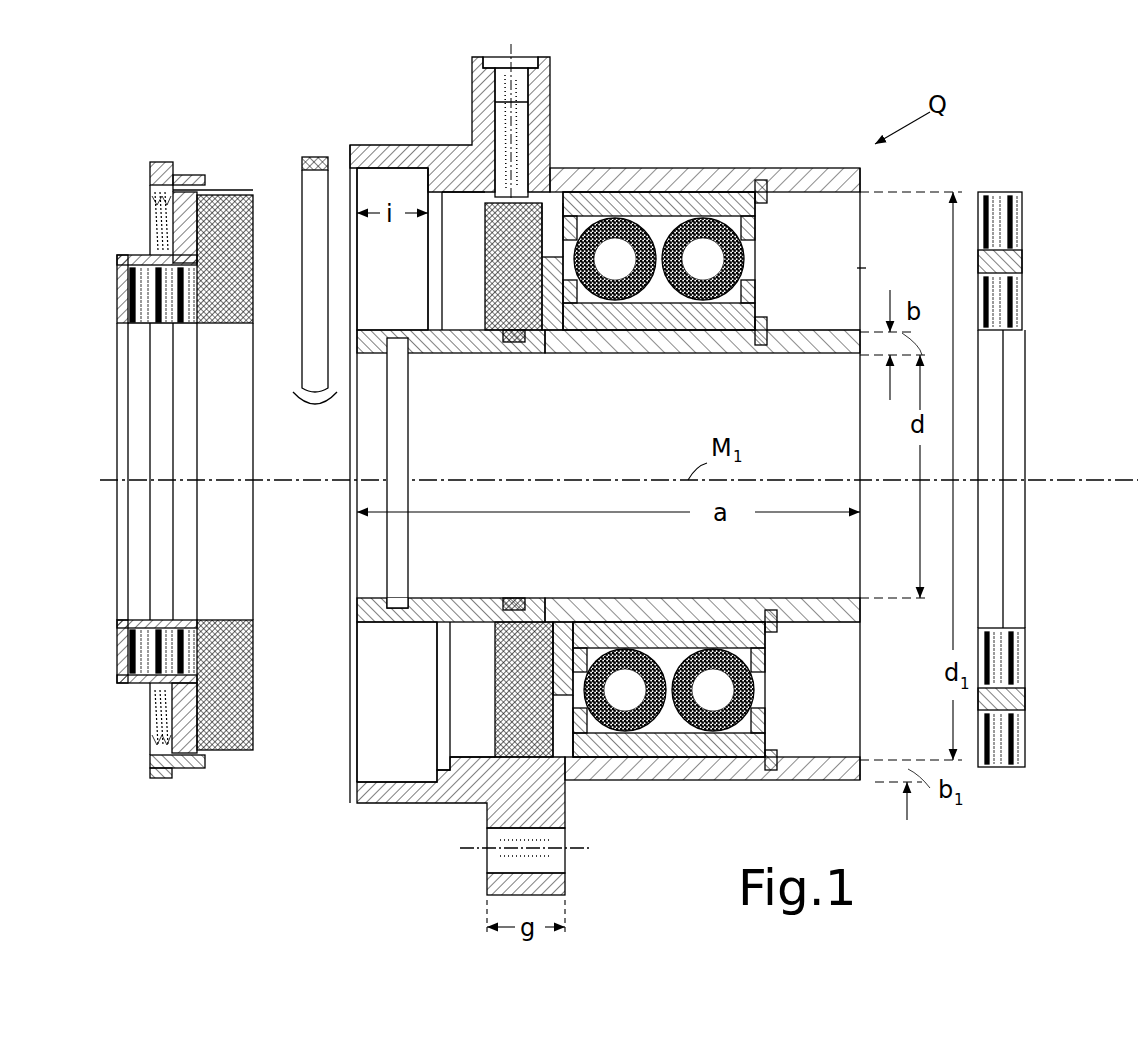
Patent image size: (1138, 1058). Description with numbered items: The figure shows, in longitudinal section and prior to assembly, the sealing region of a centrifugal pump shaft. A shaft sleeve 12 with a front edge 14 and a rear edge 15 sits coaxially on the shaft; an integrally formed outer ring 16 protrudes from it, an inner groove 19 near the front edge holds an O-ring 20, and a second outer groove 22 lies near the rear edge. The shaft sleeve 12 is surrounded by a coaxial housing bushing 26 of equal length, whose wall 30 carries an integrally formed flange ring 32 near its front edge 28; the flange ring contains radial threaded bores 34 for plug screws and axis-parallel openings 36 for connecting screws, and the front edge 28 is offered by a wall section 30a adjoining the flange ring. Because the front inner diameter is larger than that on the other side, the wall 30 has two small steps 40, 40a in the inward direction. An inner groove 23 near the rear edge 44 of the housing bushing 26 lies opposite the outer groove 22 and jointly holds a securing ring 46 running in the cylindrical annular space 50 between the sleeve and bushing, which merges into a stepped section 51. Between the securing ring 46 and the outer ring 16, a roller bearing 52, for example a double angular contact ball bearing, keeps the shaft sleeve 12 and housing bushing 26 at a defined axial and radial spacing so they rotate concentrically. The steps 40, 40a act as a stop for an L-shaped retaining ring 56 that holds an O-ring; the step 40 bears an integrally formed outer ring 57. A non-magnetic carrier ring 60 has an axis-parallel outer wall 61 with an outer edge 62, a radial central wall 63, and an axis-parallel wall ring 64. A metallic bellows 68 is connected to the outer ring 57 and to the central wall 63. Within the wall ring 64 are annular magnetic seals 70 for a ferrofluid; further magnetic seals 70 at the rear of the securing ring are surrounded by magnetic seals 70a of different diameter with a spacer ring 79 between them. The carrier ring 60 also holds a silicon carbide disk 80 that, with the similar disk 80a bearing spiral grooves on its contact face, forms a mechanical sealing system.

The shaft sleeve 12 is at (879, 614).
The front edge 14 is at (356, 457).
The rear edge 15 is at (860, 548).
The outer ring 16 is at (567, 332).
The inner groove 19 is at (395, 419).
The O-ring 20 is at (517, 343).
The second outer groove 22 is at (766, 347).
The inner groove 23 is at (773, 770).
The housing bushing 26 is at (440, 822).
The front edge 28 is at (355, 798).
The wall 30 is at (652, 186).
The wall section 30a is at (460, 174).
The flange ring 32 is at (541, 130).
The radial threaded bore 34 is at (518, 83).
The axis-parallel opening 36 is at (497, 862).
The step 40 is at (437, 673).
The step 40a is at (450, 722).
The rear edge 44 is at (879, 270).
The securing ring 46 is at (767, 195).
The cylindrical annular space 50 is at (838, 260).
The stepped section 51 is at (478, 340).
The roller bearing 52 is at (728, 208).
The retaining ring 56 is at (598, 493).
The outer ring 57 is at (161, 162).
The carrier ring 60 is at (137, 252).
The outer wall 61 is at (228, 192).
The outer edge 62 is at (242, 752).
The central wall 63 is at (182, 748).
The wall ring 64 is at (140, 686).
The bellows 68 is at (150, 720).
The magnetic seal 70 is at (180, 610).
The magnetic seal 70a is at (1020, 768).
The spacer ring 79 is at (1005, 255).
The disk 80 is at (238, 358).
The disk 80a is at (563, 618).